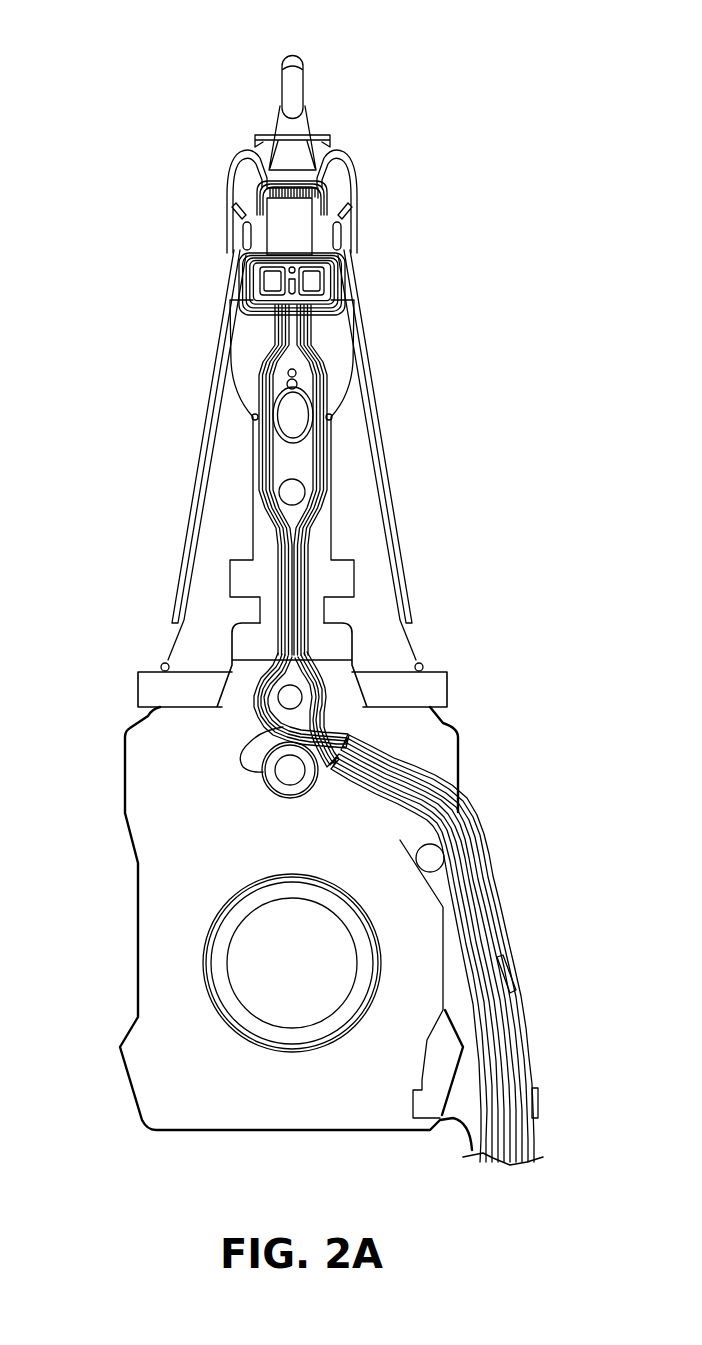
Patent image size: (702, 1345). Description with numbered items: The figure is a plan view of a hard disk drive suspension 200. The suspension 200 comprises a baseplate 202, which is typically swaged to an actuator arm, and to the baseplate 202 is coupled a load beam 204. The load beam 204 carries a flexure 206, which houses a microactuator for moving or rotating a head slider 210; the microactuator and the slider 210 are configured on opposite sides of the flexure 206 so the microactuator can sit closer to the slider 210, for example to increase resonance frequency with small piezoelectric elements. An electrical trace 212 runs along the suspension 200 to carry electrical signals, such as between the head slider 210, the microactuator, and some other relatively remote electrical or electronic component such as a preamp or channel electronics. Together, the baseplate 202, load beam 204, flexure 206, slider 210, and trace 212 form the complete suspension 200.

The suspension 200 is at (205, 62).
The baseplate 202 is at (165, 985).
The load beam 204 is at (215, 570).
The flexure 206 is at (243, 187).
The head slider 210 is at (293, 233).
The electrical trace 212 is at (300, 340).